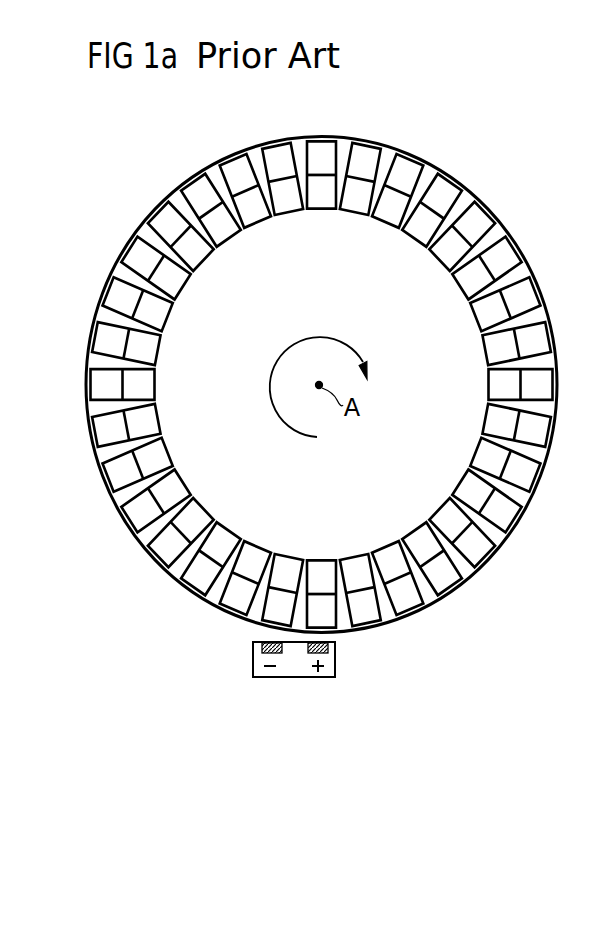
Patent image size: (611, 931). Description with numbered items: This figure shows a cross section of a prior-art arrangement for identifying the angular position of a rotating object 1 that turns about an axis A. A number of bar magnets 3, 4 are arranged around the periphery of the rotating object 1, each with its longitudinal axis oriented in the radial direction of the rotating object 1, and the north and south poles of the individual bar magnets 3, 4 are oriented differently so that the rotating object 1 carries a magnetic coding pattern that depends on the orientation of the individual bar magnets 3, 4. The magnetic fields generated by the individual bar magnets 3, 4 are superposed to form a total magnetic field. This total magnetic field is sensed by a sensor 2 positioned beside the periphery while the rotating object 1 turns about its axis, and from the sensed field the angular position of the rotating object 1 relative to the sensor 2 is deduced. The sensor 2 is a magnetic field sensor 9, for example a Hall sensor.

The rotating object 1 is at (336, 361).
The sensor 2 is at (318, 683).
The bar magnet 3 is at (329, 385).
The bar magnet 4 is at (352, 343).
The magnetic field sensor 9 is at (337, 658).